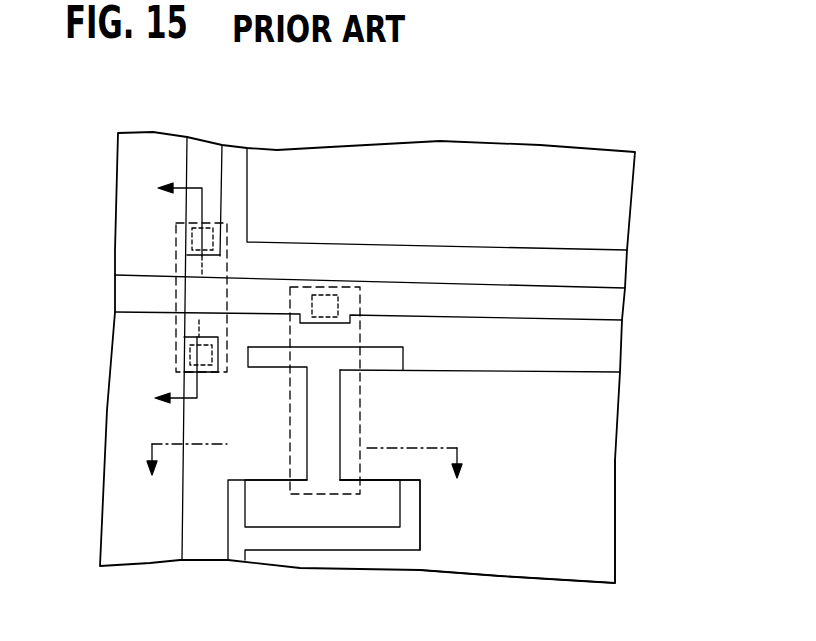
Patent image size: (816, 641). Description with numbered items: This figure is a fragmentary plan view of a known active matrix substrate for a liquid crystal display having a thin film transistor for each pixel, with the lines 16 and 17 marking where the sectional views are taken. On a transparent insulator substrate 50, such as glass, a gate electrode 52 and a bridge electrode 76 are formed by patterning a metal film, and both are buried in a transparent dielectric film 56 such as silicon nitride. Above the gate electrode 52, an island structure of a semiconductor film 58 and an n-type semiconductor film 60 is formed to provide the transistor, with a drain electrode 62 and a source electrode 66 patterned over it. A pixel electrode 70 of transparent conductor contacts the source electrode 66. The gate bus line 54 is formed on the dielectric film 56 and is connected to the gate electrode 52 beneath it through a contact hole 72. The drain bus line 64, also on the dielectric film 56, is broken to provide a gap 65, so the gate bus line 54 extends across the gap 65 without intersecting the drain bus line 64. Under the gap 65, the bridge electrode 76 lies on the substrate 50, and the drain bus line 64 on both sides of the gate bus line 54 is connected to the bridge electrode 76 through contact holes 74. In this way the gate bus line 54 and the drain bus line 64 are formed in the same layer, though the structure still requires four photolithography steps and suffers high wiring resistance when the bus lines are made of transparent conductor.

The section line 16- 16 is at (305, 478).
The section line 17- 17 is at (161, 294).
The transparent insulator substrate 50 is at (632, 237).
The gate electrode 52 is at (348, 336).
The gate bus line 54 is at (427, 295).
The transparent dielectric film 56 is at (595, 352).
The semiconductor film 58 is at (331, 552).
The n-type semiconductor film 60 is at (355, 518).
The drain electrode 62 is at (270, 455).
The drain bus line 64 is at (205, 157).
The gap 65 is at (190, 322).
The source electrode 66 is at (380, 462).
The pixel electrode 70 is at (563, 467).
The contact hole 72 is at (325, 295).
The contact holes 74 is at (210, 238).
The bridge electrode 76 is at (215, 268).